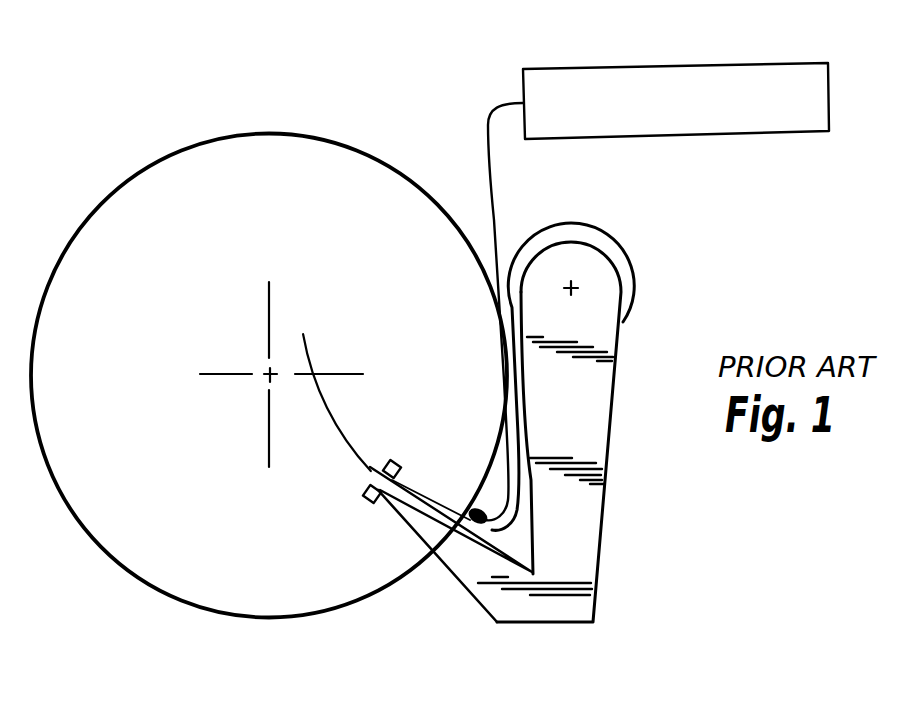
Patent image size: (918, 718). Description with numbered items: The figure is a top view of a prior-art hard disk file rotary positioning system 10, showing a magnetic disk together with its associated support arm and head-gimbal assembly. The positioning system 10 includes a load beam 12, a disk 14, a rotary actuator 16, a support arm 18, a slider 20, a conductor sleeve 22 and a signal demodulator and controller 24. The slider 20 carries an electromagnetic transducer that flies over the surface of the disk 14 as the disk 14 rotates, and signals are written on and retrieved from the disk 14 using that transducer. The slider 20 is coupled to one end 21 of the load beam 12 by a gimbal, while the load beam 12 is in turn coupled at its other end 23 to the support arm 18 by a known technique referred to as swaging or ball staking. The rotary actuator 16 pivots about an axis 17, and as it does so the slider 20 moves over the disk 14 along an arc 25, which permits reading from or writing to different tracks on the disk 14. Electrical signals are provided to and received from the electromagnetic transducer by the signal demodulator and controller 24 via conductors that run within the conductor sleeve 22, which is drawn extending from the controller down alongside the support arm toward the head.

The hard disk file rotary positioning system 10 is at (210, 115).
The load beam 12 is at (415, 486).
The disk 14 is at (124, 192).
The rotary actuator 16 is at (580, 222).
The axis 17 is at (573, 284).
The support arm 18 is at (607, 503).
The slider 20 is at (363, 506).
The end 21 is at (367, 470).
The conductor sleeve 22 is at (489, 157).
The end 23 is at (460, 570).
The signal demodulator and controller 24 is at (650, 67).
The arc 25 is at (332, 408).